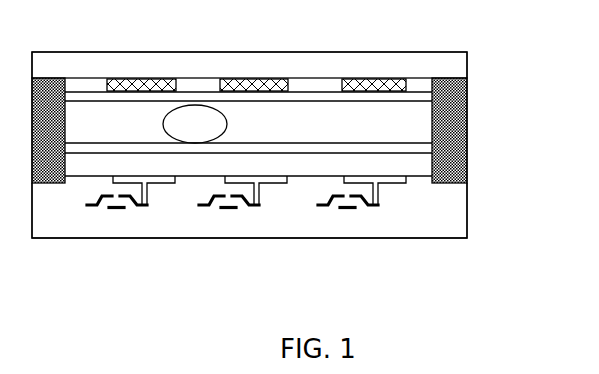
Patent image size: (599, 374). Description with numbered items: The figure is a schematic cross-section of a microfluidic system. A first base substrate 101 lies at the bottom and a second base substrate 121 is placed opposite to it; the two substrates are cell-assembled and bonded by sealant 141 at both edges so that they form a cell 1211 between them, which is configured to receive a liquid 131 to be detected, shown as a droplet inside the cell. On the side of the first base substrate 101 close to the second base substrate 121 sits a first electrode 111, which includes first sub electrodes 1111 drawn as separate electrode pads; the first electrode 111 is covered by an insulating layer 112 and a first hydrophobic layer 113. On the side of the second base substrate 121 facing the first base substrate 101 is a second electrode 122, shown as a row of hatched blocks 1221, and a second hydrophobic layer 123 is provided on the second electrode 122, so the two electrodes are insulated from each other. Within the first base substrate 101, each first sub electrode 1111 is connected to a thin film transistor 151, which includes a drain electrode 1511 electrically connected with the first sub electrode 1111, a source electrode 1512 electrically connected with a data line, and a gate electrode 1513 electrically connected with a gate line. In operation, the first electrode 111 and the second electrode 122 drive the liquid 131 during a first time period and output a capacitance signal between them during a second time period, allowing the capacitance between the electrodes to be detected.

The first base substrate 101 is at (268, 231).
The first electrode 111 is at (336, 220).
The first sub electrode 1111 is at (336, 220).
The insulating layer 112 is at (420, 165).
The first hydrophobic layer 113 is at (420, 147).
The second base substrate 121 is at (249, 54).
The cell 1211 is at (418, 138).
The second electrode 122 is at (256, 50).
The light shielding sub-block 1221 is at (256, 50).
The second hydrophobic layer 123 is at (248, 51).
The liquid to be detected 131 is at (228, 87).
The sealant 141 is at (405, 118).
The thin film transistor 151 is at (232, 257).
The drain electrode 1511 is at (249, 231).
The source electrode 1512 is at (215, 256).
The gate electrode 1513 is at (232, 250).